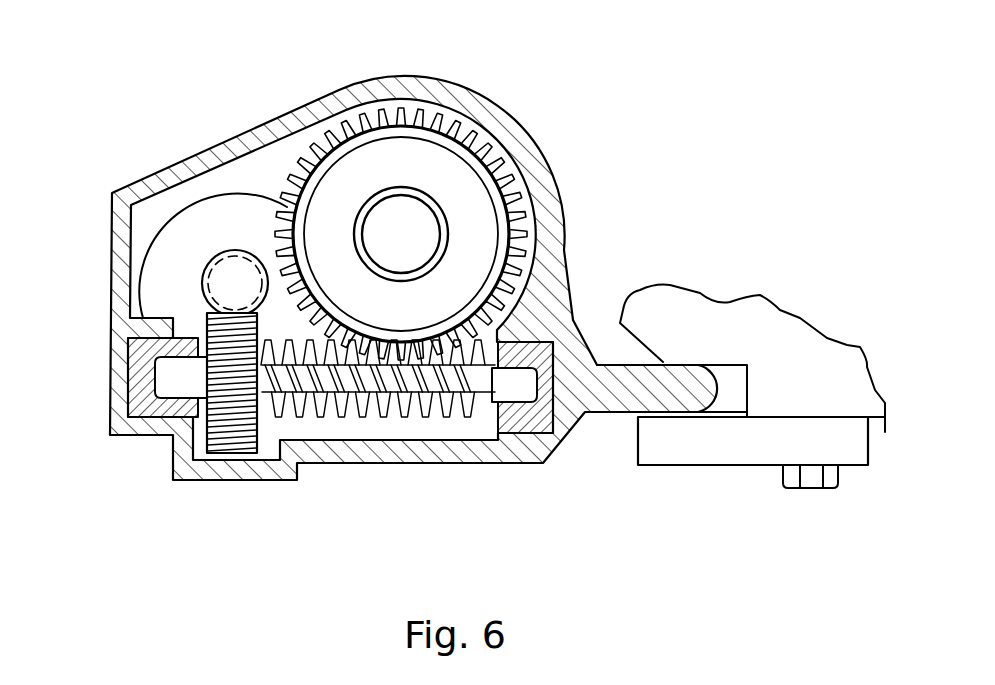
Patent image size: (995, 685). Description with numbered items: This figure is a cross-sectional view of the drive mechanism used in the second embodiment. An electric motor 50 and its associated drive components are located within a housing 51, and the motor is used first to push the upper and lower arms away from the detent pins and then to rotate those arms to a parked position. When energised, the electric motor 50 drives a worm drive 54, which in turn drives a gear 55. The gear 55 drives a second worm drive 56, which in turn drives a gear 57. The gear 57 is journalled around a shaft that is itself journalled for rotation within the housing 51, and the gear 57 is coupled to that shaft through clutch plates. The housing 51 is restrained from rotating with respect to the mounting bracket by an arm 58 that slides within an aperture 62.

The electric motor 50 is at (167, 233).
The housing 51 is at (278, 124).
The worm drive 54 is at (218, 290).
The gear 55 is at (232, 440).
The second worm drive 56 is at (364, 398).
The gear 57 is at (520, 180).
The arm 58 is at (621, 418).
The aperture 62 is at (636, 356).